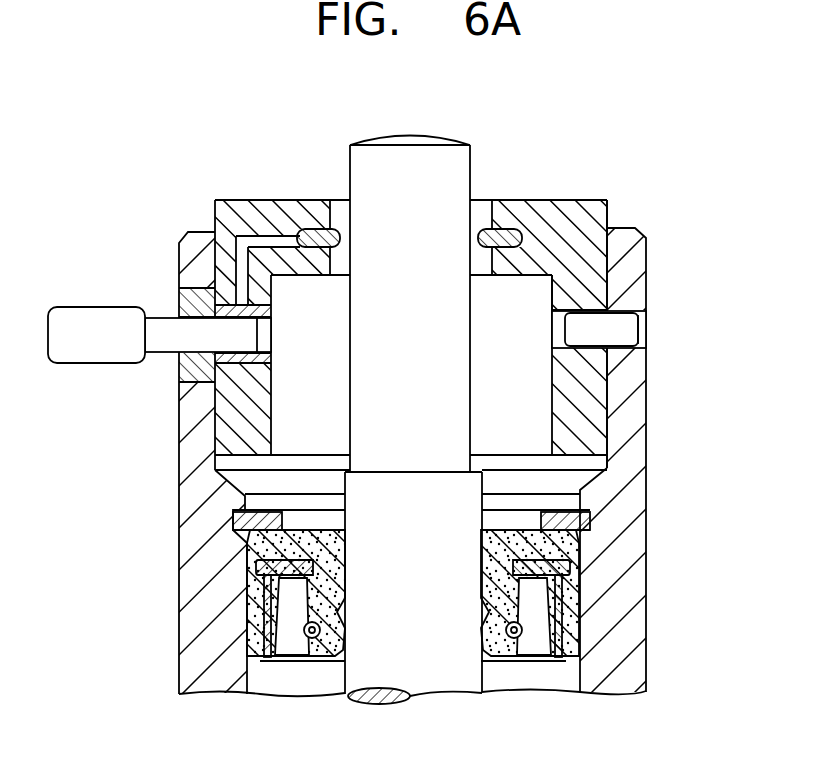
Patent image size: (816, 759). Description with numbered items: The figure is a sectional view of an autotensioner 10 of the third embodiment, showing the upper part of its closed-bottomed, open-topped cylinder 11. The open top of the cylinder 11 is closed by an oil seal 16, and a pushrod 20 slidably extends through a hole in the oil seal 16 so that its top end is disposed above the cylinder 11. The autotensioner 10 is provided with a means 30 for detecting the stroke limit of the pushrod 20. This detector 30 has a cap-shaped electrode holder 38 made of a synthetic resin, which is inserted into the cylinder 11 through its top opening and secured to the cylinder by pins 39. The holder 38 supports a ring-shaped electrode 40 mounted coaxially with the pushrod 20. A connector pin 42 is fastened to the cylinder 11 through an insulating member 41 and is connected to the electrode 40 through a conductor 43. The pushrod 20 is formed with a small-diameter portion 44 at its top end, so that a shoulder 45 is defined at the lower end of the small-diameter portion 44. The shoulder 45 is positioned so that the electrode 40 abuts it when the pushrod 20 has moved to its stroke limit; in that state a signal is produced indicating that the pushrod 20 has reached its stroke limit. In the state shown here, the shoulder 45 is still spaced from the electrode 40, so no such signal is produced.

The autotensioner 10 is at (170, 241).
The cylinder 11 is at (195, 625).
The oil seal 16 is at (250, 556).
The pushrod 20 is at (463, 682).
The means for detecting the stroke limit 30 is at (325, 187).
The electrode holder 38 is at (578, 207).
The pins 39 is at (622, 330).
The electrode 40 is at (510, 226).
The insulating member 41 is at (182, 368).
The connector pin 42 is at (77, 318).
The conductor 43 is at (237, 243).
The small-diameter portion 44 is at (375, 163).
The shoulder 45 is at (477, 467).